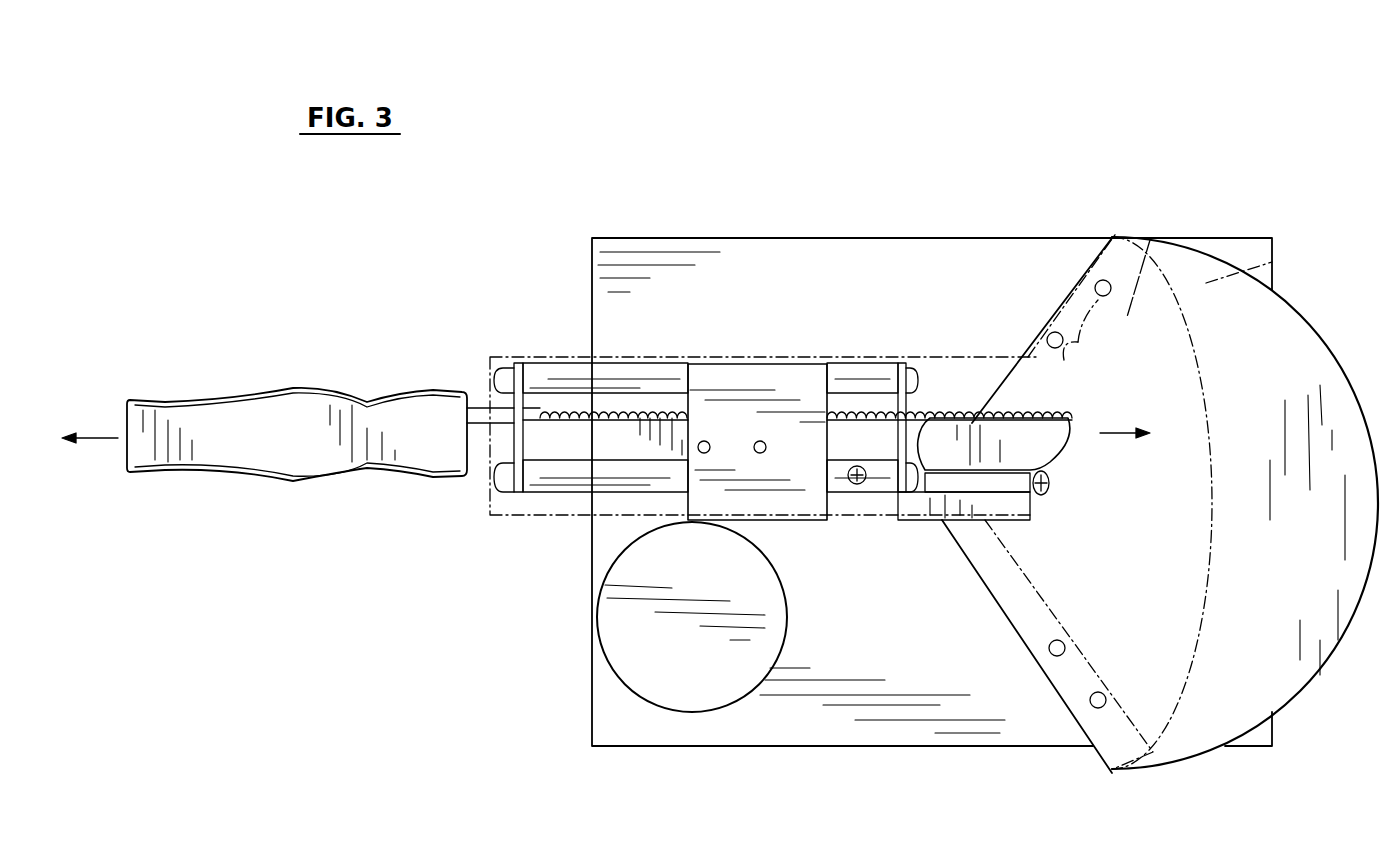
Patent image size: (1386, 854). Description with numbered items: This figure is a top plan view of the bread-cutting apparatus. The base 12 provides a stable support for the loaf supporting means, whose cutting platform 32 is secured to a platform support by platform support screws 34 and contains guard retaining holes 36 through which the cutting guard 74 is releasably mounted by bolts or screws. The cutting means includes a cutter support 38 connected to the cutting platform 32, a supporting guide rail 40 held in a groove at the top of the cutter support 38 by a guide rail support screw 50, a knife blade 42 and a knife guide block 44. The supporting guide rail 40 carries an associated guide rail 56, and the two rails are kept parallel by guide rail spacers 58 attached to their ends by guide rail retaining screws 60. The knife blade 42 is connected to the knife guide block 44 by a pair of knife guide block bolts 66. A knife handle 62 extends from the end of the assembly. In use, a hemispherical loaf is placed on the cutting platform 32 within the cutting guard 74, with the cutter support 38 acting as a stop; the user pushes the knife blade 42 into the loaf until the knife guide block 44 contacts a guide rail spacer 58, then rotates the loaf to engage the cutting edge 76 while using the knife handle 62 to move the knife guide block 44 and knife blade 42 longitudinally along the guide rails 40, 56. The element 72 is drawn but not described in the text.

The base 12 is at (915, 698).
The cutting platform 32 is at (1292, 348).
The platform support screws 34 is at (1050, 488).
The guard retaining holes 36 is at (1065, 330).
The cutter support 38 is at (1033, 510).
The supporting guide rail 40 is at (565, 478).
The knife blade 42 is at (982, 425).
The knife guide block 44 is at (800, 364).
The guide rail support screw 50 is at (857, 485).
The guide rail 56 is at (567, 382).
The guide rail spacers 58 is at (516, 494).
The guide rail retaining screws 60 is at (494, 372).
The knife handle 62 is at (270, 460).
The knife guide block bolts 66 is at (760, 440).
The wheel 72 is at (670, 692).
The cutting guard 74 is at (1058, 285).
The cutting edge 76 is at (1022, 430).